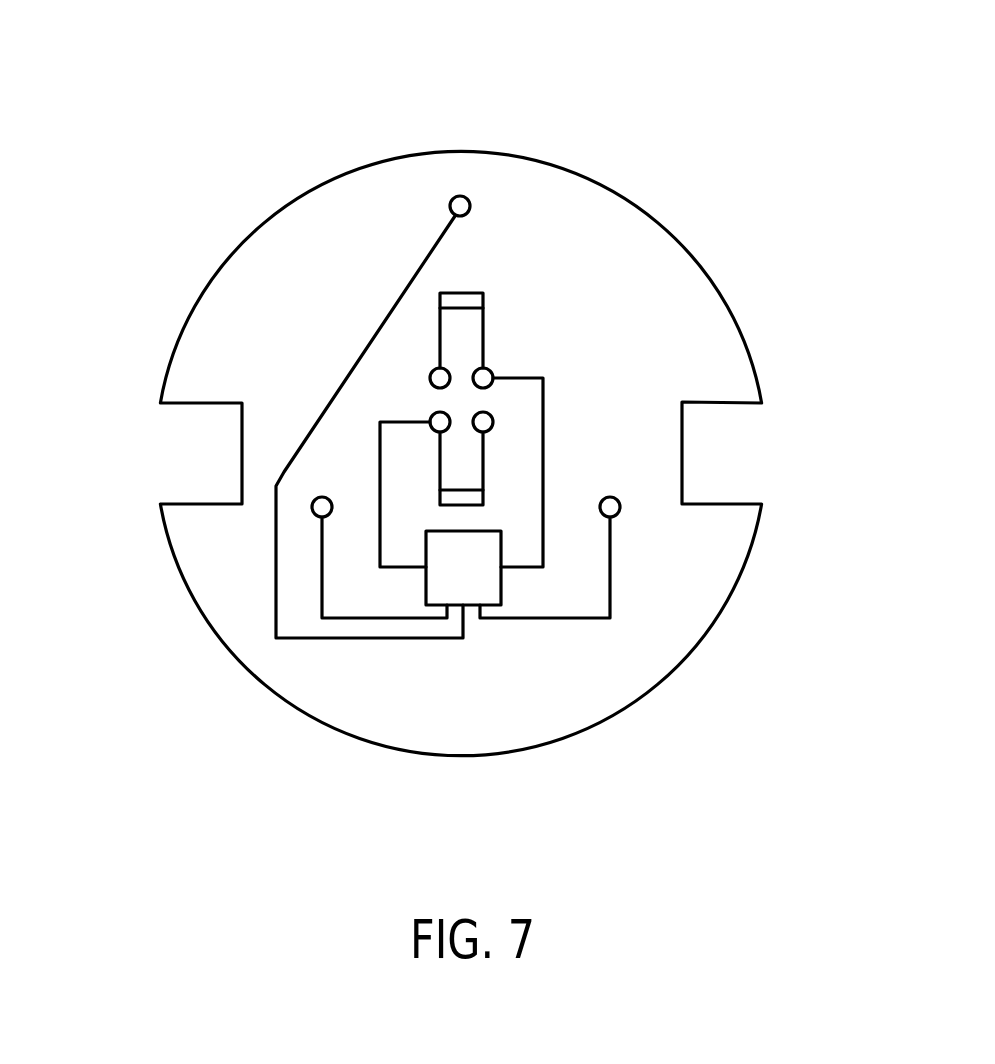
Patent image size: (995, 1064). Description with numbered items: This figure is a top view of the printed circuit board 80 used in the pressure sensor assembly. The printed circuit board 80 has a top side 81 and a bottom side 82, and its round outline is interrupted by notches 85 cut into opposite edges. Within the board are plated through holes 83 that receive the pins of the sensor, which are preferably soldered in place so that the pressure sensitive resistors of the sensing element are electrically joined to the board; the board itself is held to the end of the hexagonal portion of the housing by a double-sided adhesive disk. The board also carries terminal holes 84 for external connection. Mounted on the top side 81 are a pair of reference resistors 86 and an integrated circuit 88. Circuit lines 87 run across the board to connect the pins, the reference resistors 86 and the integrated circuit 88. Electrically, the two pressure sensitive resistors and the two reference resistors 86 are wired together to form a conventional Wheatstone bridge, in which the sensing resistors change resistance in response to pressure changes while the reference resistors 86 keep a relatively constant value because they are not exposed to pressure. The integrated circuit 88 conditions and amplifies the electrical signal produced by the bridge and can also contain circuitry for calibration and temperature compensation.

The printed circuit board 80 is at (463, 380).
The top side 81 is at (248, 288).
The bottom side 82 is at (193, 604).
The plated through holes 83 is at (488, 377).
The terminal holes 84 is at (460, 196).
The notches 85 is at (730, 443).
The reference resistors 86 is at (475, 303).
The circuit lines 87 is at (607, 568).
The integrated circuit 88 is at (487, 585).